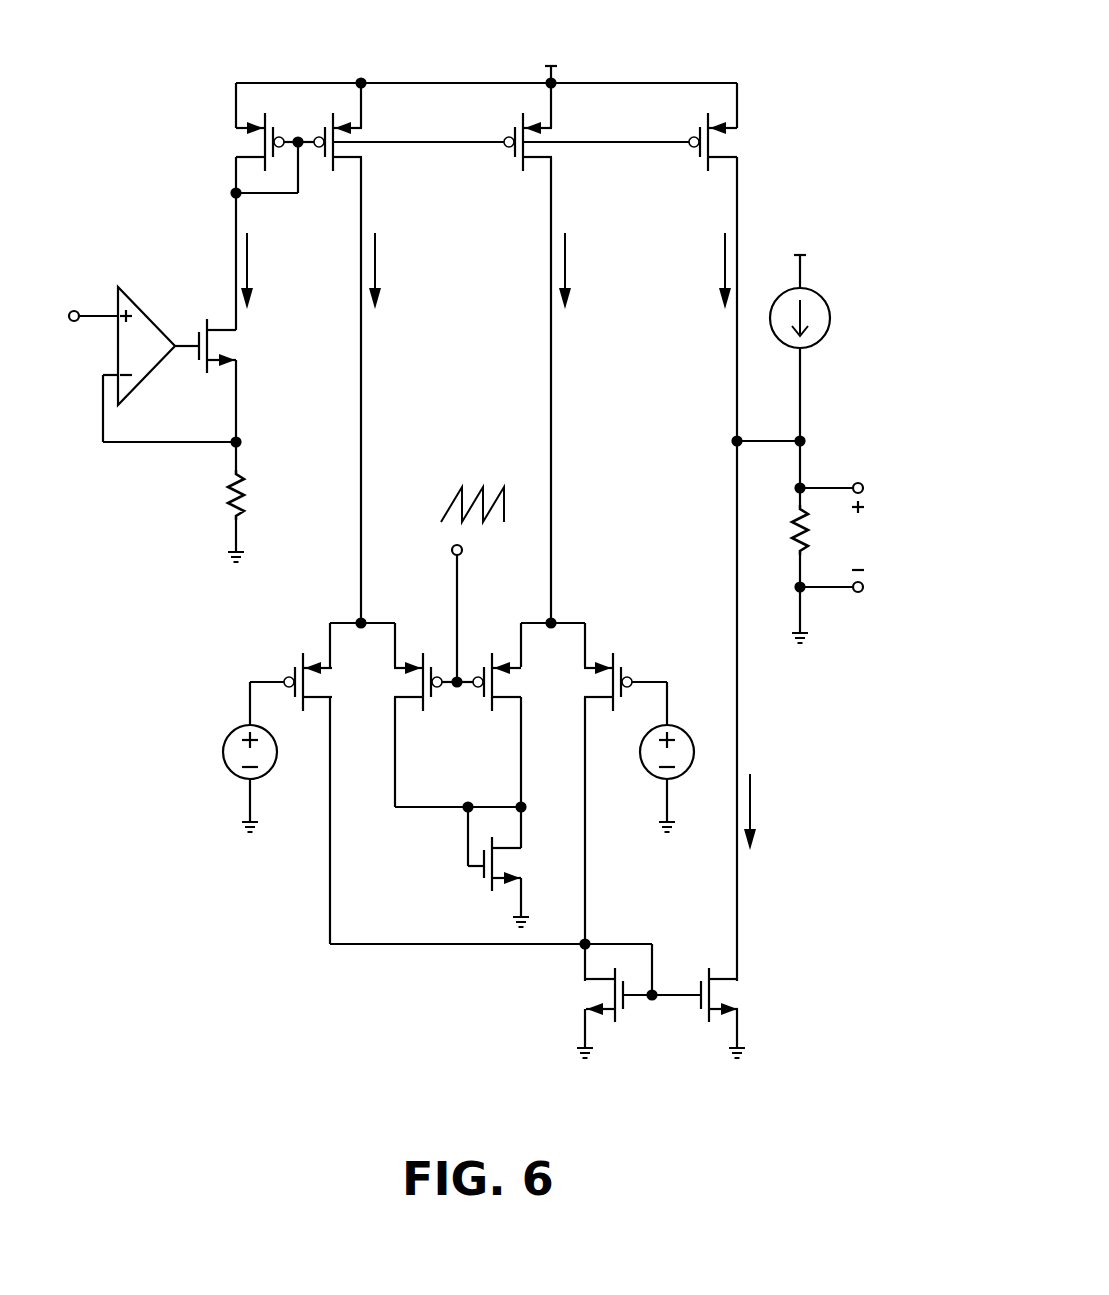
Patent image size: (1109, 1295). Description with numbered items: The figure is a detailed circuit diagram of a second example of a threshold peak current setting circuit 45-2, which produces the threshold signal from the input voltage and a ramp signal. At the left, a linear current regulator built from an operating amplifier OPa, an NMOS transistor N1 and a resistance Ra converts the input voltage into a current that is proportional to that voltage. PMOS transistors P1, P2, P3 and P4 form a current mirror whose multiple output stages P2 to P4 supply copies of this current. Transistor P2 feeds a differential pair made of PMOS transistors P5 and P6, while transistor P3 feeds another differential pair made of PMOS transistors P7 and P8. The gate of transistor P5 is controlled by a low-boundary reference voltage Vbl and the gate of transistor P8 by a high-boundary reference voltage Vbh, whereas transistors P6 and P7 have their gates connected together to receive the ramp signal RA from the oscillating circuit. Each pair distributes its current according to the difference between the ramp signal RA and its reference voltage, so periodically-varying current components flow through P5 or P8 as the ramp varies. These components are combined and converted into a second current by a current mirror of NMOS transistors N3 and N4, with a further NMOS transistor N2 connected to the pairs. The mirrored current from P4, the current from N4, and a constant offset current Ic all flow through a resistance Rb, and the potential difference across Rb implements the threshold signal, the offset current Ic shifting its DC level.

The threshold peak current setting circuit 45-2 is at (743, 50).
The PMOS transistor P1 is at (240, 142).
The PMOS transistor P2 is at (361, 145).
The PMOS transistor P3 is at (552, 145).
The PMOS transistor P4 is at (737, 145).
The PMOS transistor P5 is at (306, 667).
The PMOS transistor P6 is at (418, 667).
The PMOS transistor P7 is at (497, 667).
The PMOS transistor P8 is at (611, 667).
The NMOS transistor N1 is at (245, 346).
The NMOS transistor N2 is at (522, 864).
The NMOS transistor N3 is at (583, 995).
The NMOS transistor N4 is at (743, 995).
The operating amplifier OPa is at (150, 318).
The resistance Ra is at (213, 495).
The resistance Rb is at (782, 530).
The ramp signal RA is at (472, 483).
The constant offset current Ic is at (814, 318).
The low-boundary reference voltage Vbl is at (238, 741).
The high-boundary reference voltage Vbh is at (677, 739).